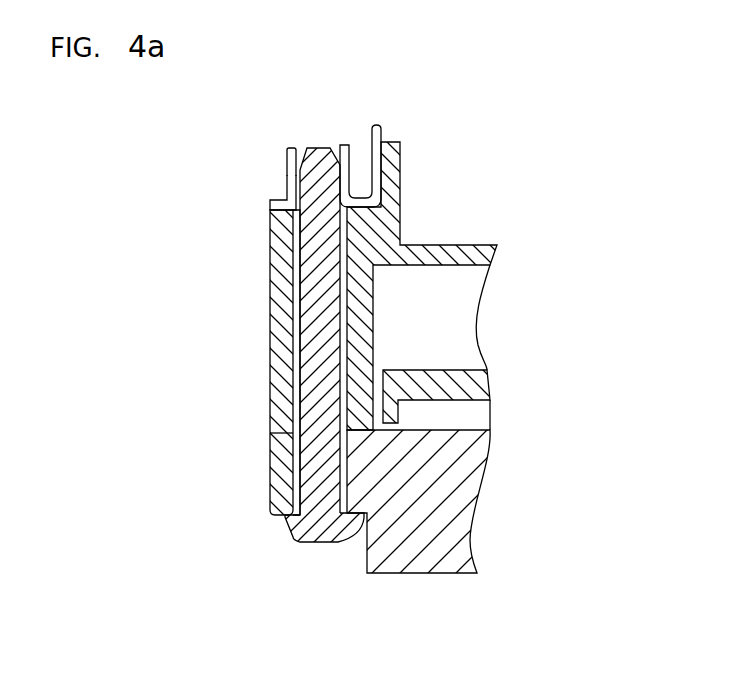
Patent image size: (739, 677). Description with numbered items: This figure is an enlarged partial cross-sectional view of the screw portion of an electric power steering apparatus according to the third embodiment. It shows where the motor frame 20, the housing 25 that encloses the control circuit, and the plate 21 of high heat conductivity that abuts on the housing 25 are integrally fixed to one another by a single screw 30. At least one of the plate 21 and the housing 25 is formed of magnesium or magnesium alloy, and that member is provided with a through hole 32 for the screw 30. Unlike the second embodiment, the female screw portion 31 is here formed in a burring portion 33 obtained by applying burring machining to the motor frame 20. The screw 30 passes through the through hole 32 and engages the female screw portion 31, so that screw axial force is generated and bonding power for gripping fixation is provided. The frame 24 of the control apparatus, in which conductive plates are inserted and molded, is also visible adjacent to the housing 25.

The motor frame 20 is at (372, 145).
The plate 21 is at (383, 552).
The frame 24 is at (490, 390).
The housing 25 is at (270, 343).
The screw 30 is at (287, 528).
The female screw portion 31 is at (287, 188).
The through hole 32 is at (293, 288).
The burring portion 33 is at (290, 155).